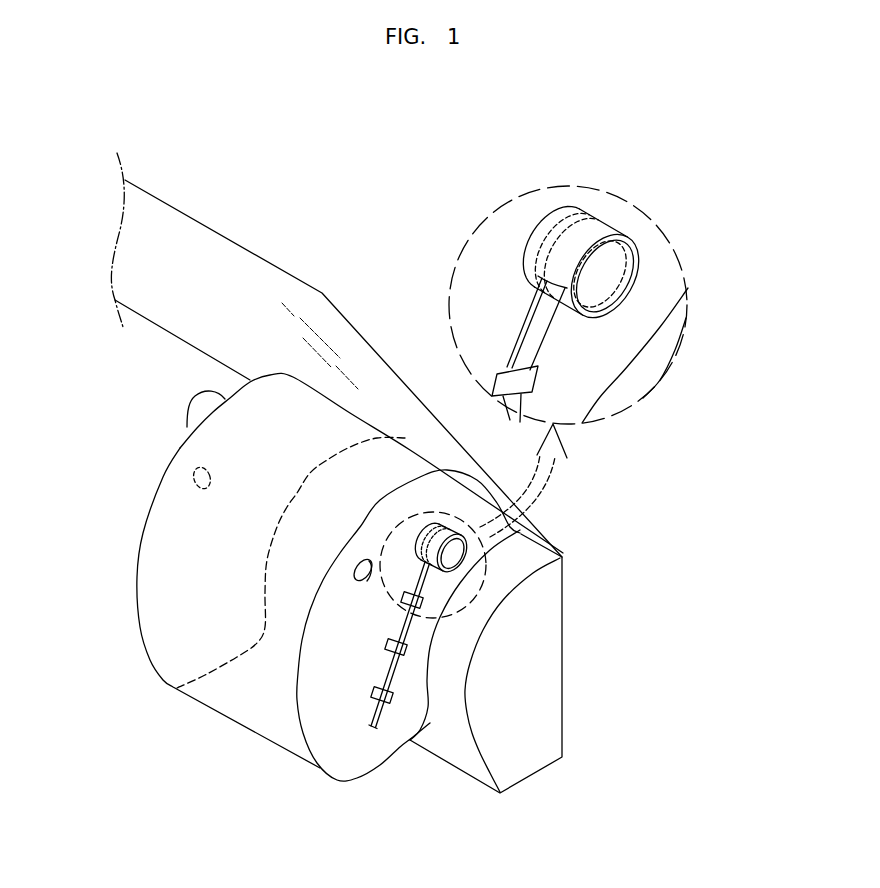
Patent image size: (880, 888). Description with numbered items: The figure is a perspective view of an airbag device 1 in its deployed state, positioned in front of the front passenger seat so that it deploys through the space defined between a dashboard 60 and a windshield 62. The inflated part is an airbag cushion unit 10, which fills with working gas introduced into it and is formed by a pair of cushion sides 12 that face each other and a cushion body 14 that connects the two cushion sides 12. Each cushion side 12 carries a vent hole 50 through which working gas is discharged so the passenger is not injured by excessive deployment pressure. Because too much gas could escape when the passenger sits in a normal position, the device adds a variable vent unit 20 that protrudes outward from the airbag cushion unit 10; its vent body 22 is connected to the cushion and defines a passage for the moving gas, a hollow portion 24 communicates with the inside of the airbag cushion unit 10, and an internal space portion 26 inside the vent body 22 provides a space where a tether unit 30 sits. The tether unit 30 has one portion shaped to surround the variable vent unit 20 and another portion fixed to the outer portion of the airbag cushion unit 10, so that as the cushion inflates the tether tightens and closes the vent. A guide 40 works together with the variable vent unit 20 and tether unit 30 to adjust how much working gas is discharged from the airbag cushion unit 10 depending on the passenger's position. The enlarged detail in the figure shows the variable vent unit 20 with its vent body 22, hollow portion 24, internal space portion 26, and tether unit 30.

The airbag device 1 is at (144, 752).
The airbag cushion unit 10 is at (235, 826).
The cushion sides 12 is at (330, 727).
The cushion body 14 is at (260, 692).
The variable vent unit 20 is at (615, 205).
The vent body 22 is at (563, 217).
The hollow portion 24 is at (632, 263).
The internal space portion 26 is at (543, 245).
The tether unit 30 is at (530, 342).
The guide 40 is at (407, 643).
The vent hole 50 is at (361, 557).
The dashboard 60 is at (530, 715).
The windshield 62 is at (240, 280).